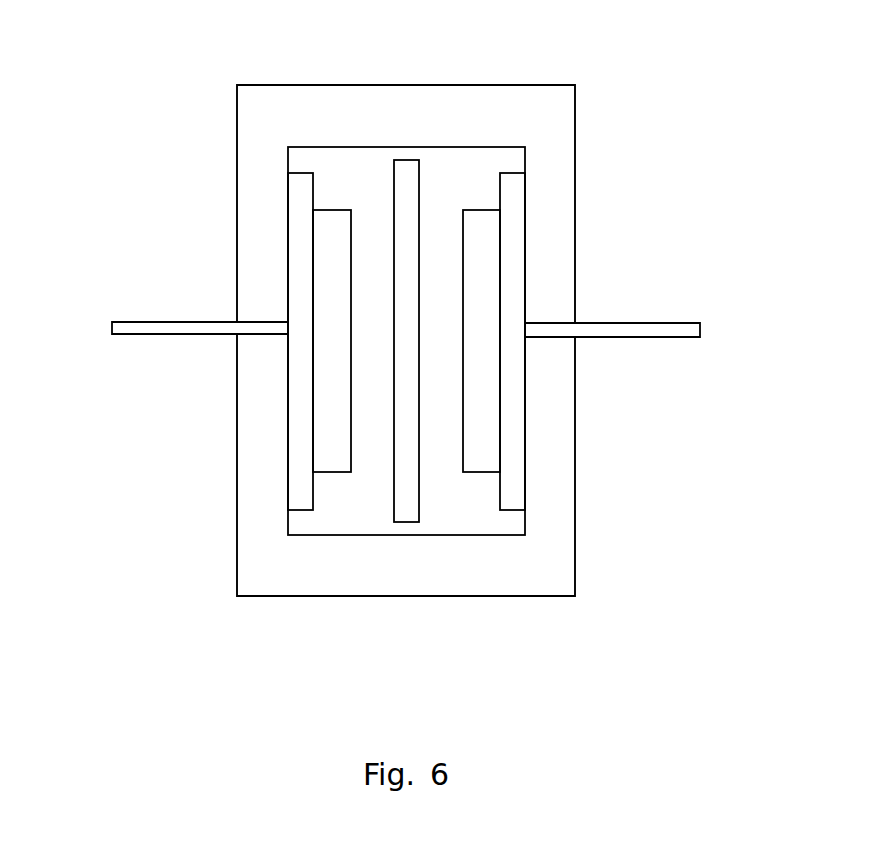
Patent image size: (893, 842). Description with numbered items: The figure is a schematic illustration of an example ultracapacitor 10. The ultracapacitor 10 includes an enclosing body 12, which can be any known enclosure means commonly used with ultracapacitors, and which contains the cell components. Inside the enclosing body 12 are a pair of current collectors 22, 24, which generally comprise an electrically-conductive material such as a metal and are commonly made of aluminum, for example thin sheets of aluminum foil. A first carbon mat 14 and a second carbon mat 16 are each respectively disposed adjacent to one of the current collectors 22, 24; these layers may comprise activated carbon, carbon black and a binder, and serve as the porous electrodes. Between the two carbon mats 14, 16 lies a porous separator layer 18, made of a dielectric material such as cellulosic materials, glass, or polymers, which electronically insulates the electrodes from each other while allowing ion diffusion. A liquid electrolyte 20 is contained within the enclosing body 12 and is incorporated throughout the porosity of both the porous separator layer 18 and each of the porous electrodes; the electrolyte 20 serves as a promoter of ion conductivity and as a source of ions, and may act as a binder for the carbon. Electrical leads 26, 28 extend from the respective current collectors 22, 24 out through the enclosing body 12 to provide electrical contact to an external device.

The ultracapacitor 10 is at (153, 94).
The enclosing body 12 is at (538, 572).
The first carbon mat 14 is at (337, 460).
The second carbon mat 16 is at (483, 460).
The porous separator layer 18 is at (404, 172).
The liquid electrolyte 20 is at (481, 198).
The current collector 22 is at (300, 236).
The current collector 24 is at (510, 237).
The electrical lead 26 is at (148, 329).
The electrical lead 28 is at (670, 332).